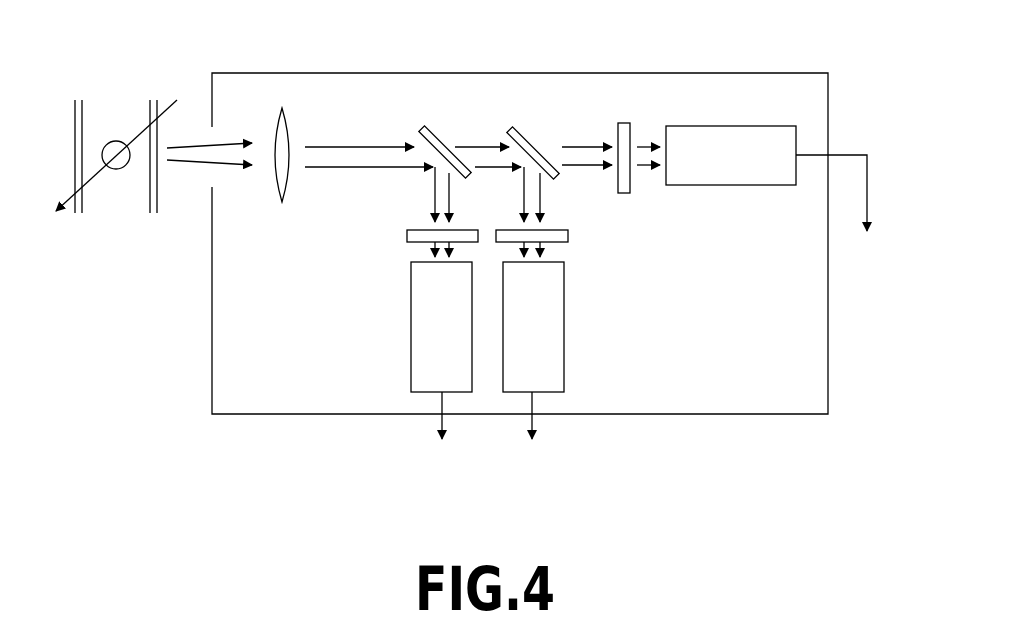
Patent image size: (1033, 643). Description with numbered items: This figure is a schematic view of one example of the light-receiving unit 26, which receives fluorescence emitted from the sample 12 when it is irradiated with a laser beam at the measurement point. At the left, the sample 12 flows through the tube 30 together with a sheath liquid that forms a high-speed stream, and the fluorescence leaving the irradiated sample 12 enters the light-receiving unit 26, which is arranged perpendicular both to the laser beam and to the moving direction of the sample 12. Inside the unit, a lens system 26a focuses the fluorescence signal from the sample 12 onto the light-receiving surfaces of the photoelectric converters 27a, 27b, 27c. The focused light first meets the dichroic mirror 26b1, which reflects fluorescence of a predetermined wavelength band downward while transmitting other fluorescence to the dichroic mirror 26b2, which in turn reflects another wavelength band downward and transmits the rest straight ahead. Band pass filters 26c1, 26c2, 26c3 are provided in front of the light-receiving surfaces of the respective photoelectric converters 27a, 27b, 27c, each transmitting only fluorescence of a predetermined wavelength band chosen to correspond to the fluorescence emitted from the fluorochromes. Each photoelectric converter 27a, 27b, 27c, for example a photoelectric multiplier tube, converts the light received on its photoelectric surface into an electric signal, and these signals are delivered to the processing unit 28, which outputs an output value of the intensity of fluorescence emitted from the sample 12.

The sample 12 is at (115, 141).
The tube 30 is at (75, 102).
The light-receiving unit 26 is at (360, 73).
The lens system 26a is at (282, 203).
The dichroic mirror 26b1 is at (440, 132).
The dichroic mirror 26b2 is at (530, 130).
The band pass filter 26c1 is at (407, 237).
The band pass filter 26c2 is at (568, 237).
The band pass filter 26c3 is at (625, 193).
The photoelectric converter 27a is at (410, 348).
The photoelectric converter 27b is at (564, 338).
The photoelectric converter 27c is at (693, 126).
The processing unit 28 is at (657, 313).